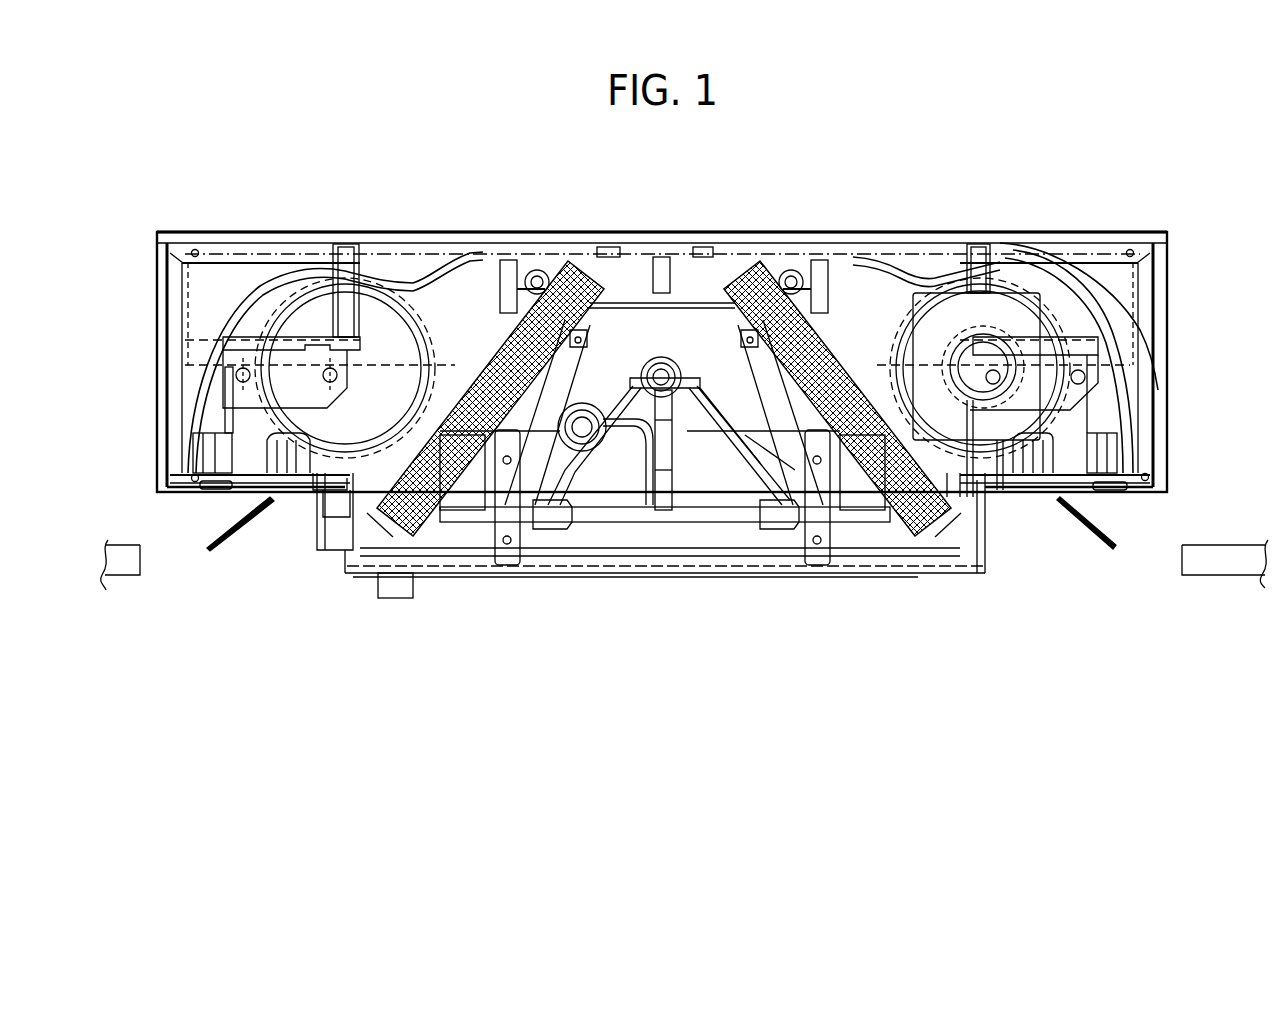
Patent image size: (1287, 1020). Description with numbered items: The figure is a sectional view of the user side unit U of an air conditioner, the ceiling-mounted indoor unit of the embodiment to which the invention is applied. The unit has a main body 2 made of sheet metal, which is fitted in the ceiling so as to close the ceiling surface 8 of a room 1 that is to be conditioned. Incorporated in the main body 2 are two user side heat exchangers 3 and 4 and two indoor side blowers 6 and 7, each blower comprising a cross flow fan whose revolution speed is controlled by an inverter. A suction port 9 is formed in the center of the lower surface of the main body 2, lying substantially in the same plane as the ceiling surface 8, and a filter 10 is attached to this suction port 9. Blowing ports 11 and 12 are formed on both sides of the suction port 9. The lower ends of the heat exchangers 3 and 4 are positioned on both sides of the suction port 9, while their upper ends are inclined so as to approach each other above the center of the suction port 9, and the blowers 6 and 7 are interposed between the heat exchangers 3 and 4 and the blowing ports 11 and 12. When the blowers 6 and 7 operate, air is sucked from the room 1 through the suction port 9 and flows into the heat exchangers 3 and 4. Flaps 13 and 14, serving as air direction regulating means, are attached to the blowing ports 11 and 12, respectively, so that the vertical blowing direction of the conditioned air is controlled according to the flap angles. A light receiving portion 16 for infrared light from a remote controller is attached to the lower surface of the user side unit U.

The room 1 is at (638, 689).
The main body 2 is at (1168, 263).
The user side heat exchanger 3 is at (487, 300).
The user side heat exchanger 4 is at (795, 300).
The indoor side blower 6 is at (306, 292).
The indoor side blower 7 is at (998, 290).
The ceiling surface 8 is at (1221, 578).
The suction port 9 is at (600, 578).
The filter 10 is at (690, 578).
The blowing port 11 is at (228, 494).
The blowing port 12 is at (1100, 497).
The flap 13 is at (250, 522).
The flap 14 is at (1085, 528).
The light receiving portion 16 is at (393, 600).
The user side unit U is at (886, 229).
The air conditioner AC is at (1053, 216).